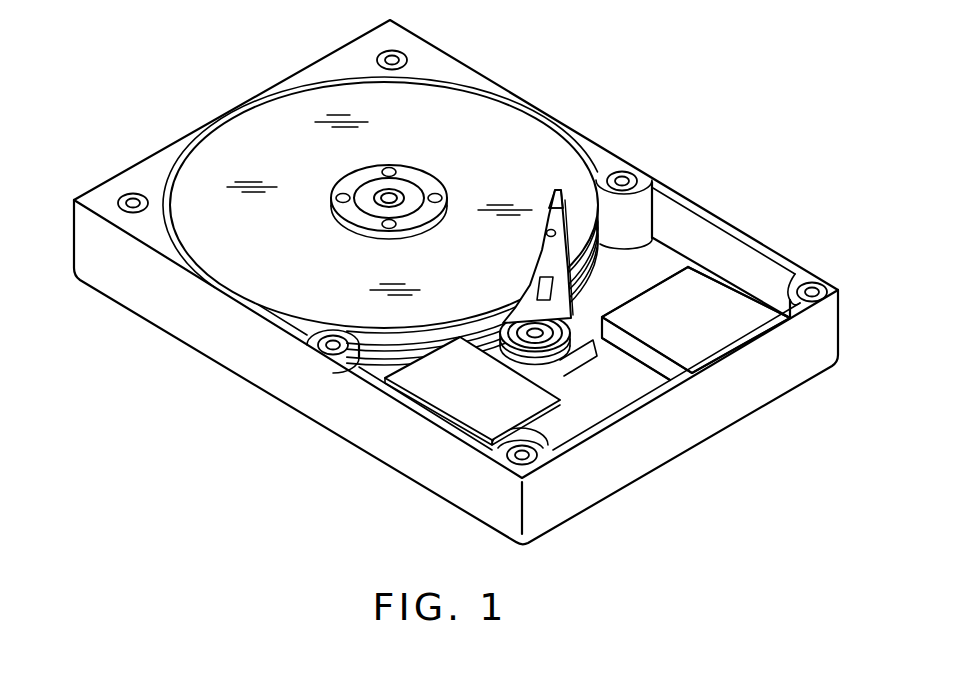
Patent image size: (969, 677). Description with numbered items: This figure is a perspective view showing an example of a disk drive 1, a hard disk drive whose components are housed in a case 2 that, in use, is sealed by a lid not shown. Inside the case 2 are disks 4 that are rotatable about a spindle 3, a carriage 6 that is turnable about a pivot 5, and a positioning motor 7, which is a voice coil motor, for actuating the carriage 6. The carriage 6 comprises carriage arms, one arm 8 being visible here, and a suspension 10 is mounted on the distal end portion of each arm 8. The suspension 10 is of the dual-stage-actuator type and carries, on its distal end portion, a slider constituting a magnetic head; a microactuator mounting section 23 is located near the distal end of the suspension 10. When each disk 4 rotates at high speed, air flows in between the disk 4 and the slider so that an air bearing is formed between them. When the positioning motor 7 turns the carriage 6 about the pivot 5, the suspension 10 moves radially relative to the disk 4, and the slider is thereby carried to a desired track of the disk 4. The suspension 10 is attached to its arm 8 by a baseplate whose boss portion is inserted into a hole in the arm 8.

The disk drive 1 is at (456, 282).
The case 2 is at (262, 375).
The spindle 3 is at (403, 187).
The disk 4 is at (498, 130).
The pivot 5 is at (548, 347).
The carriage 6 is at (597, 277).
The positioning motor 7 is at (462, 413).
The arm 8 is at (559, 197).
The suspension 10 is at (557, 300).
The microactuator mounting section 23 is at (558, 190).